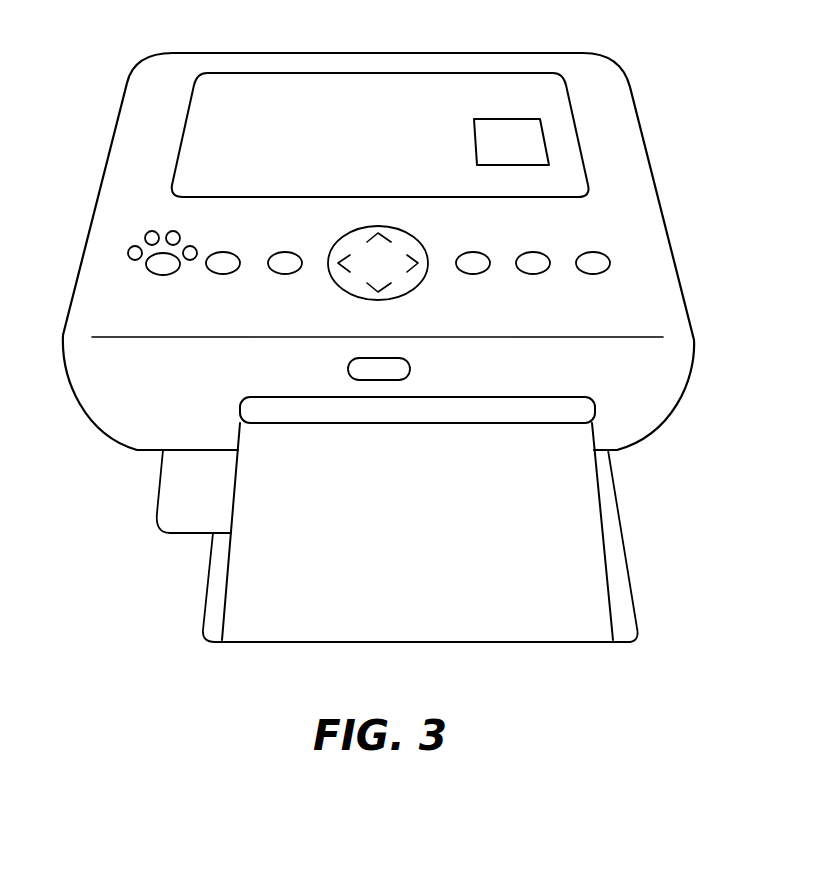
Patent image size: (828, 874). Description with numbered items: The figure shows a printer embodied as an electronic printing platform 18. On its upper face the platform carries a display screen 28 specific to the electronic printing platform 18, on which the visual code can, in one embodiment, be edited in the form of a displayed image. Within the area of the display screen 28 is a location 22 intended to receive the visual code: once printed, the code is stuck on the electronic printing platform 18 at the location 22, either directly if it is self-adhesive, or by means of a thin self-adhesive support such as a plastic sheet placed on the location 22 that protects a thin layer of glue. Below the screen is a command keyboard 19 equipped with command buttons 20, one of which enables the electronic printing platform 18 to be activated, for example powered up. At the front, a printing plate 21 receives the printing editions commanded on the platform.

The electronic printing platform 18 is at (133, 143).
The command keyboard 19 is at (416, 276).
The command buttons 20 is at (350, 242).
The printing plate 21 is at (480, 615).
The location 22 is at (492, 142).
The display screen 28 is at (273, 93).